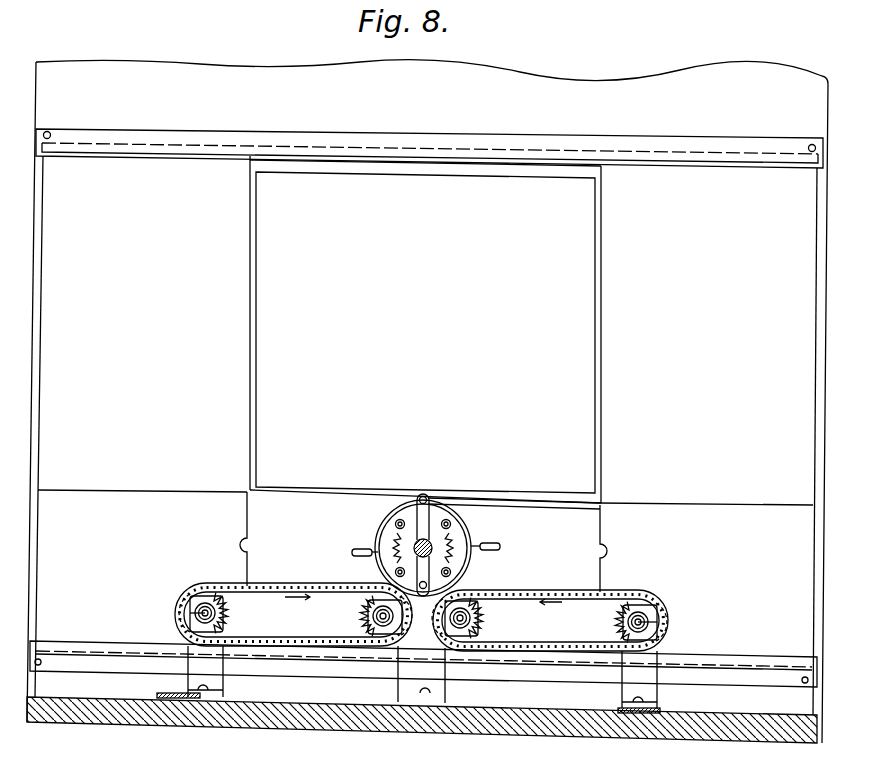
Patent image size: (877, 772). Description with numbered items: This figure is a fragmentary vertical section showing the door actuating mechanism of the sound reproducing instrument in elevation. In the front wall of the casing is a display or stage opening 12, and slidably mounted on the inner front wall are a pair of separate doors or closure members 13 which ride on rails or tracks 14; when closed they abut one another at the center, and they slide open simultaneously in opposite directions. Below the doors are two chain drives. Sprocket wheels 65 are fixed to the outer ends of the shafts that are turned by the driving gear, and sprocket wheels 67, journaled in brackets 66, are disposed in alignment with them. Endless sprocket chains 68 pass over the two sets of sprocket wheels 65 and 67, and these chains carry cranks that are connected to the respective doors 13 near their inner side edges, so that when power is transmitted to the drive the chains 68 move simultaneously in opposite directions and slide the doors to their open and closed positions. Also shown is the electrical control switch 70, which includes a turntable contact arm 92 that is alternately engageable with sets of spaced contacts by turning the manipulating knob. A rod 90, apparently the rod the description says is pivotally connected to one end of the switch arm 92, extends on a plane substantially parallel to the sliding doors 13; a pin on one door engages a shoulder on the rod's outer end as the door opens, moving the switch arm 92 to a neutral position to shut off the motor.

The display or stage opening 12 is at (425, 331).
The doors or closure members 13 is at (425, 330).
The rails or tracks 14 is at (368, 150).
The sprocket wheels 65 is at (357, 612).
The brackets 66 is at (177, 628).
The sprocket wheels 67 is at (226, 613).
The endless sprocket chains 68 is at (298, 590).
The electrical control switch 70 is at (468, 531).
The connecting rod 90 is at (478, 498).
The turntable contact arm 92 is at (418, 512).